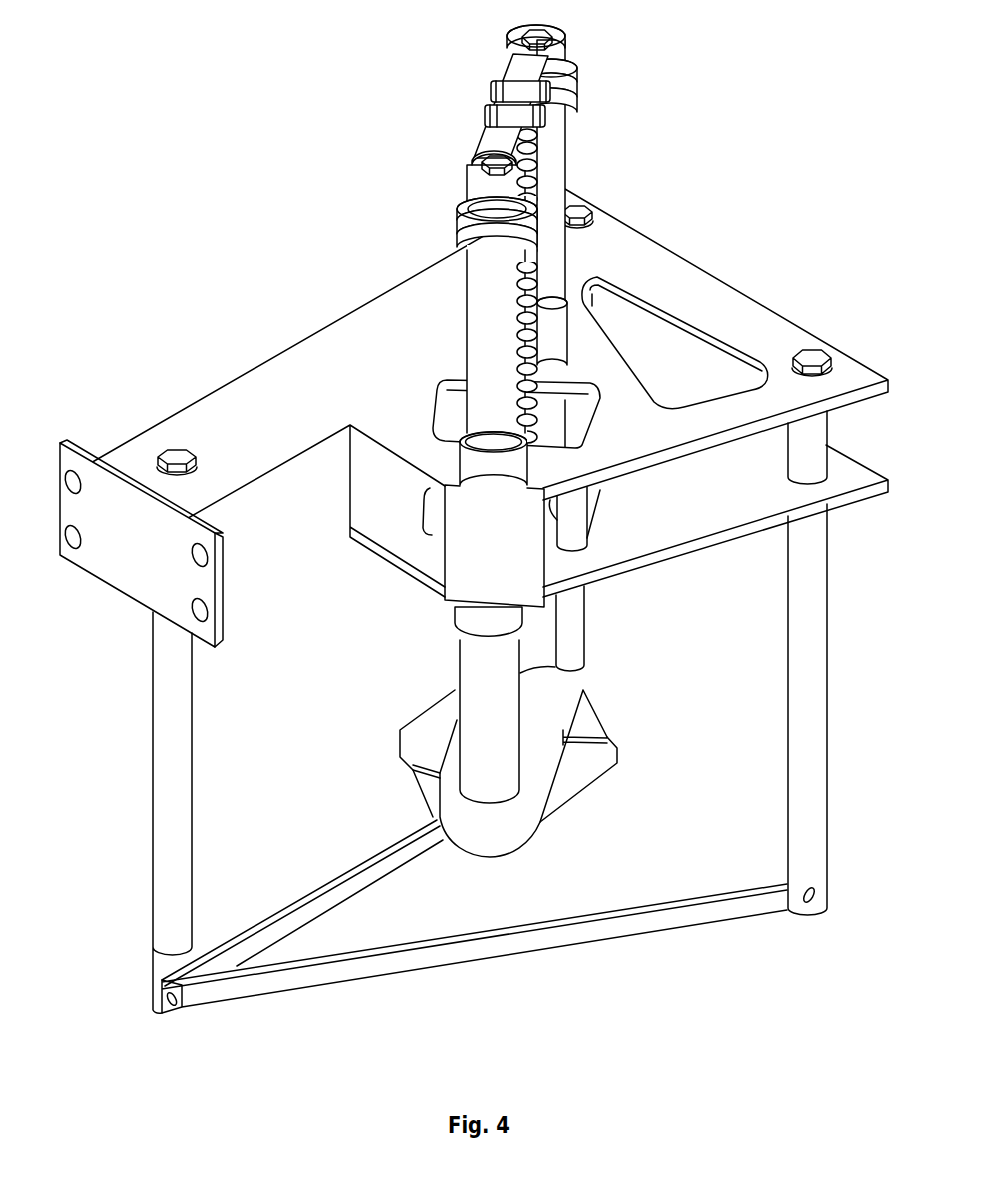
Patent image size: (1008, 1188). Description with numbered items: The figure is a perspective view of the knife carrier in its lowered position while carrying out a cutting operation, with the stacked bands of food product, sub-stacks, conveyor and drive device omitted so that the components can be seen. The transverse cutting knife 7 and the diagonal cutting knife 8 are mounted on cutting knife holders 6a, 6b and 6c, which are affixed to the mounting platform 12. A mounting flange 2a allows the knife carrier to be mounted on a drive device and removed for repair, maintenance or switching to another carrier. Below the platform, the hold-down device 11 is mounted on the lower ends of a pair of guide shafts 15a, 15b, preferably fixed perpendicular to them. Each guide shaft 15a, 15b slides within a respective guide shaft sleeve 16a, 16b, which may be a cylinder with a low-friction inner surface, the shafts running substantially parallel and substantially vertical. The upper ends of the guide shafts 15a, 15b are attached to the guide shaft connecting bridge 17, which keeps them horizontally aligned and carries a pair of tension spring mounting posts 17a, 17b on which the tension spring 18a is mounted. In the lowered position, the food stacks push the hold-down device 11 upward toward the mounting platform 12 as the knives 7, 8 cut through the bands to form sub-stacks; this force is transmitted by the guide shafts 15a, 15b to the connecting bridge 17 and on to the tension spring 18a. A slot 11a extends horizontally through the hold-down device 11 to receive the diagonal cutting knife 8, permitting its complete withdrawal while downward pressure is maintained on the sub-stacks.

The mounting flange 2a is at (55, 443).
The cutting knife holder 6a is at (145, 861).
The cutting knife holder 6b is at (589, 613).
The cutting knife holder 6c is at (786, 818).
The transverse cutting knife 7 is at (337, 875).
The diagonal cutting knife 8 is at (392, 978).
The hold-down device 11 is at (616, 756).
The slot 11a is at (612, 736).
The mounting platform 12 is at (286, 353).
The guide shaft 15a is at (575, 150).
The guide shaft 15b is at (462, 326).
The guide shaft sleeve 16a is at (570, 330).
The guide shaft sleeve 16b is at (463, 466).
The guide shaft connecting bridge 17 is at (490, 139).
The tension spring mounting post 17a is at (487, 89).
The tension spring mounting post 17b is at (482, 108).
The tension spring 18a is at (548, 251).